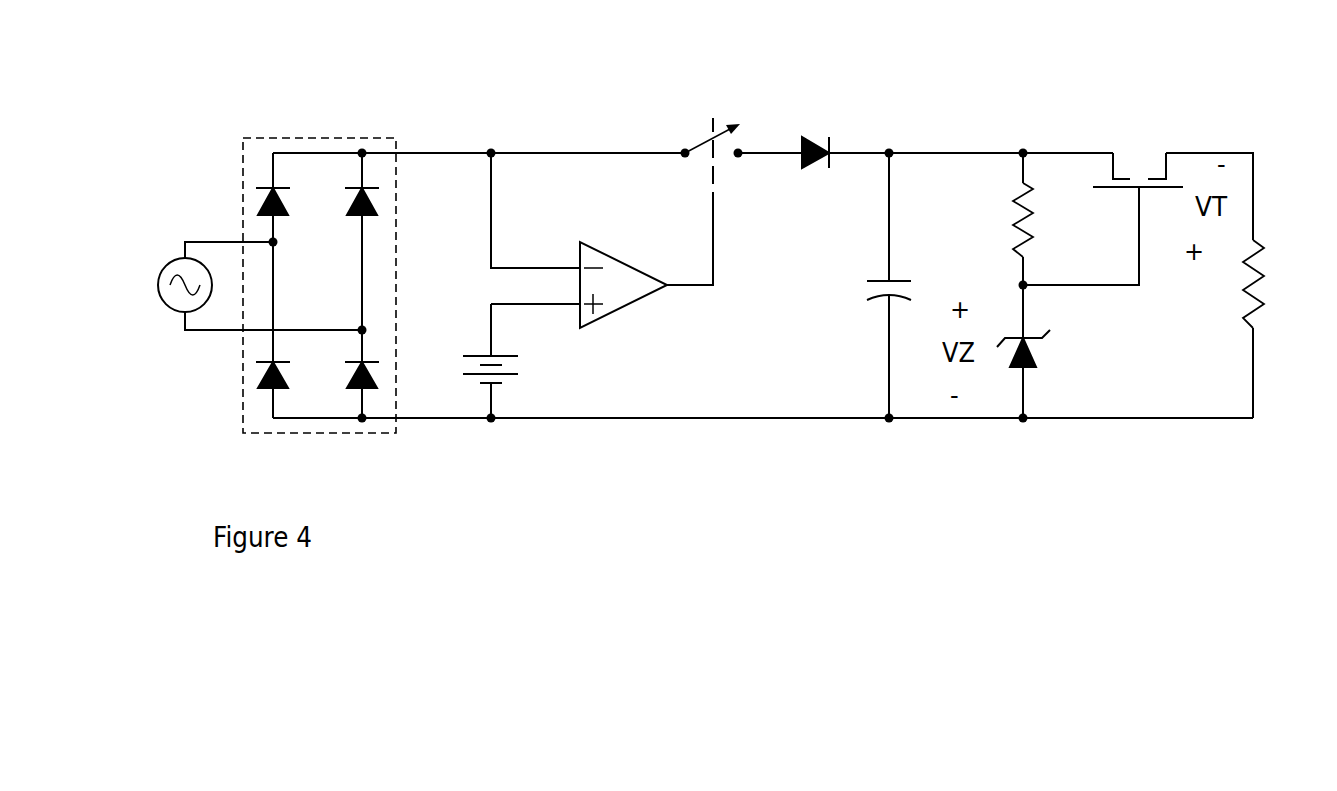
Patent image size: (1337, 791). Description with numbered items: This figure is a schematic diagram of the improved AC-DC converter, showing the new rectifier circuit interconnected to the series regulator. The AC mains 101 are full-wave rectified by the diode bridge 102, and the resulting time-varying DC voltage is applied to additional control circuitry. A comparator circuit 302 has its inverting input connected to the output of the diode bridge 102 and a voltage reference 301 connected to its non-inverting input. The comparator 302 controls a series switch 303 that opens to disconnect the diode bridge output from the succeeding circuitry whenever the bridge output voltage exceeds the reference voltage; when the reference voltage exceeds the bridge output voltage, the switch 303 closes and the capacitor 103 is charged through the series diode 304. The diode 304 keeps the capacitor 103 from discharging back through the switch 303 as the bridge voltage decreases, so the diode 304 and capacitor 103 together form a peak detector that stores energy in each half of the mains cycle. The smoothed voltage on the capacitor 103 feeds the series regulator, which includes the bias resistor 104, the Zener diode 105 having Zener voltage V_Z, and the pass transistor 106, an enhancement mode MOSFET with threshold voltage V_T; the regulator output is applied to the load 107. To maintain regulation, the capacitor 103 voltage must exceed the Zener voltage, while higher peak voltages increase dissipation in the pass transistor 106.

The AC mains 101 is at (162, 270).
The diode bridge 102 is at (323, 135).
The capacitor 103 is at (858, 290).
The bias resistor 104 is at (1017, 223).
The Zener diode 105 is at (1042, 357).
The pass transistor 106 is at (1140, 157).
The load 107 is at (1270, 283).
The voltage reference 301 is at (522, 370).
The comparator circuit 302 is at (627, 312).
The series switch 303 is at (697, 142).
The series diode 304 is at (845, 137).